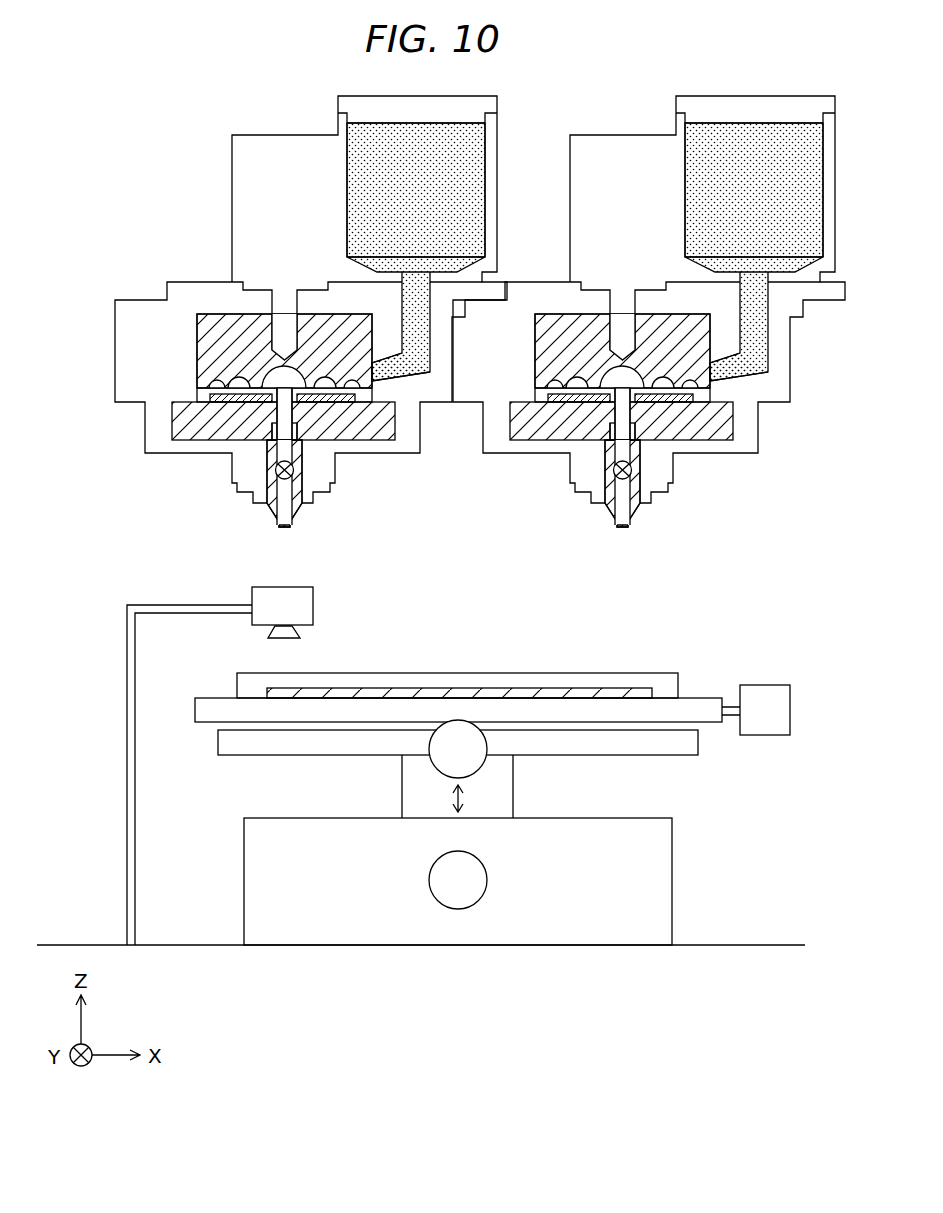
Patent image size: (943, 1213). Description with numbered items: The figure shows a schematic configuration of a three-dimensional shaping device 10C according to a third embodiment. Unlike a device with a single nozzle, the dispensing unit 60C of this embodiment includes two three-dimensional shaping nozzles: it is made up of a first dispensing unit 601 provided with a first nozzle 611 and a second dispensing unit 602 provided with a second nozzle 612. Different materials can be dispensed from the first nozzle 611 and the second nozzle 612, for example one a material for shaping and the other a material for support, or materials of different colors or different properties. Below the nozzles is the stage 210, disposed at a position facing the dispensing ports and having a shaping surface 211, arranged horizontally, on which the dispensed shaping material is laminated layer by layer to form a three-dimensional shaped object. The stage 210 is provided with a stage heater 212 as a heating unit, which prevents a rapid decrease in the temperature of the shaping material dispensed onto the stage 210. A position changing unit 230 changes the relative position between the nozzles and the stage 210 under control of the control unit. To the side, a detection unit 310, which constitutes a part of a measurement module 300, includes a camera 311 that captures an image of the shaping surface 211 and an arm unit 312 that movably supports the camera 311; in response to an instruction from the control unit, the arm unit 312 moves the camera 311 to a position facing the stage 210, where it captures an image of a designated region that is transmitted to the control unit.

The three-dimensional shaping device 10C is at (441, 505).
The dispensing unit 60C is at (480, 340).
The first dispensing unit 601 is at (311, 329).
The second dispensing unit 602 is at (649, 334).
The first nozzle 611 is at (270, 518).
The second nozzle 612 is at (635, 517).
The stage 210 is at (473, 667).
The shaping surface 211 is at (545, 673).
The stage heater 212 is at (330, 692).
The position changing unit 230 is at (499, 791).
The detection unit 310 is at (231, 766).
The measurement module 300 is at (75, 668).
The camera 311 is at (313, 606).
The arm unit 312 is at (137, 659).